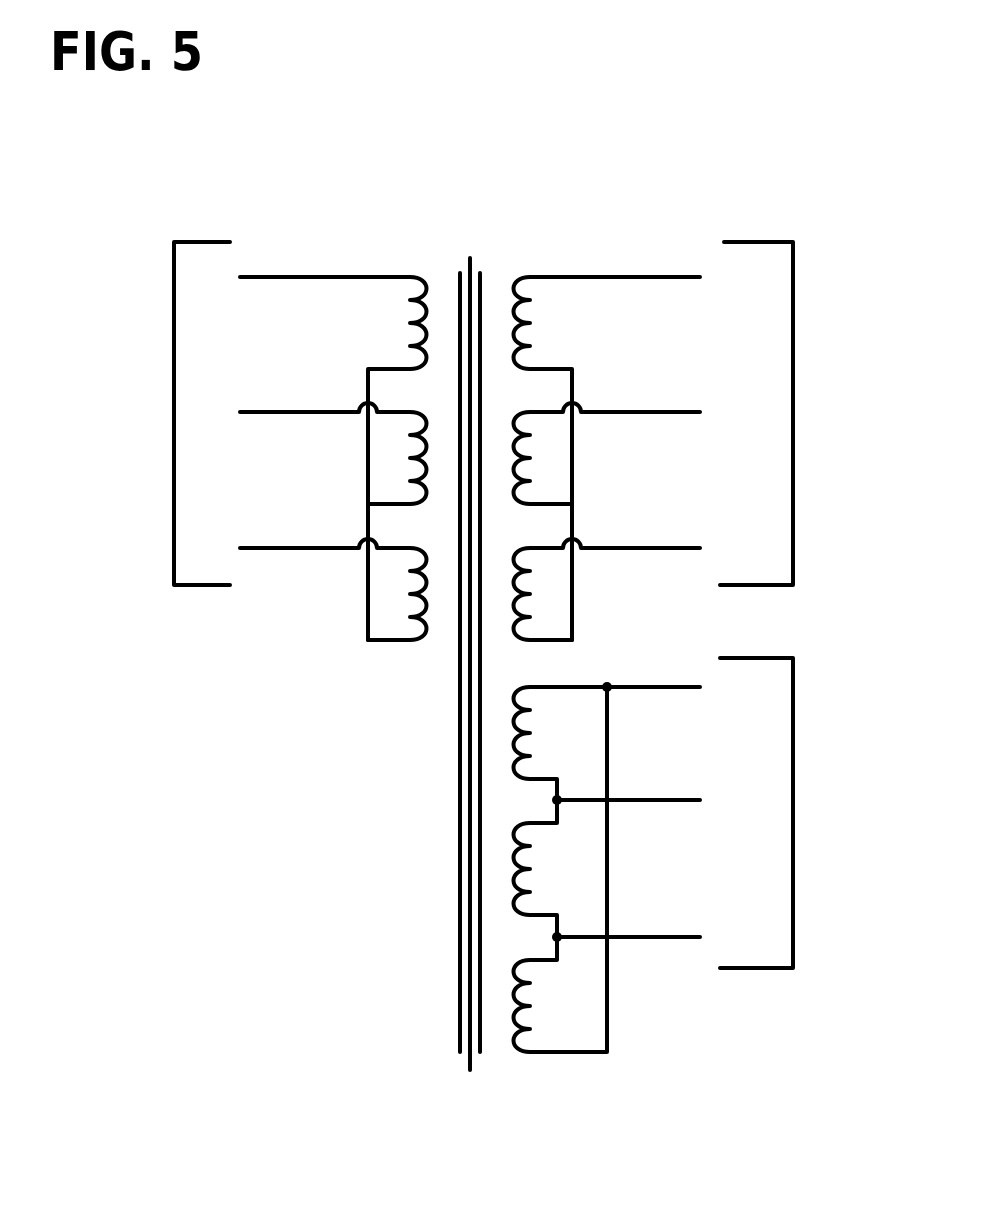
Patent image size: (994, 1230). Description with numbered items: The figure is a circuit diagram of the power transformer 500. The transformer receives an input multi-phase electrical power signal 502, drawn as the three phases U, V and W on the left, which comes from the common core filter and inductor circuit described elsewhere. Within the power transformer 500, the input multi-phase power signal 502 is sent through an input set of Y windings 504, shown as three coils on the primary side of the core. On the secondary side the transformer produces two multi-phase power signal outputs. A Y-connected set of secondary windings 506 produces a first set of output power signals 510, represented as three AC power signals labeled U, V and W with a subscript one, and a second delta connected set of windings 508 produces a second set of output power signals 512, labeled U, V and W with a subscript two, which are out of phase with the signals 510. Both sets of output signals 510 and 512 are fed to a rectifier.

The power transformer 500 is at (484, 152).
The input multi-phase electrical power signal 502 is at (174, 332).
The input set of Y windings 504 is at (355, 258).
The Y-connected set of secondary windings 506 is at (573, 260).
The delta connected set of windings 508 is at (537, 1058).
The output power signals 510 is at (795, 367).
The output power signals 512 is at (795, 736).